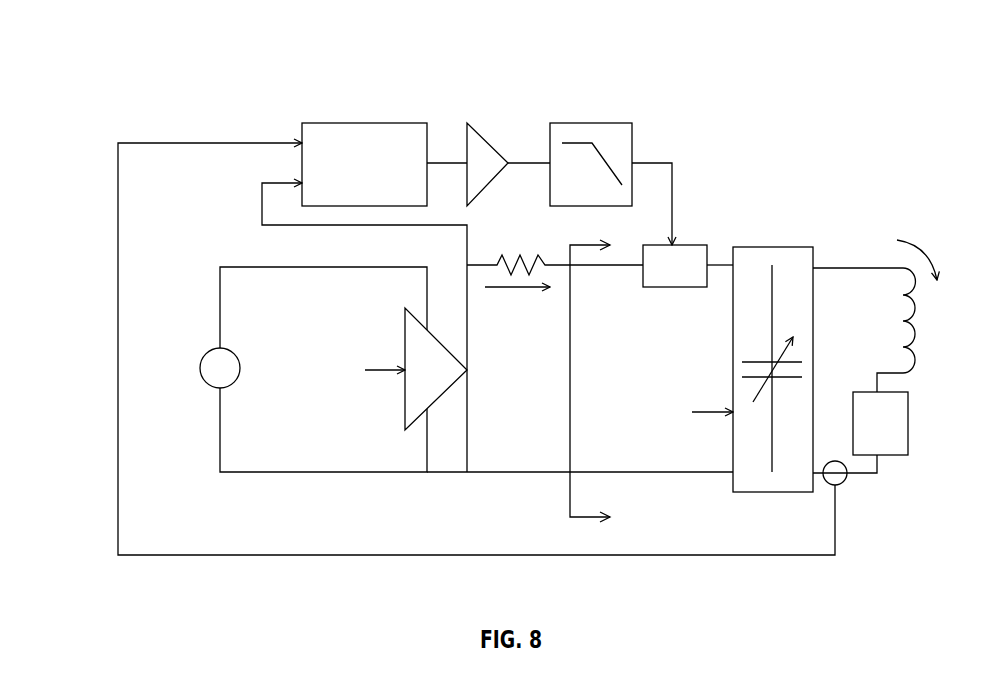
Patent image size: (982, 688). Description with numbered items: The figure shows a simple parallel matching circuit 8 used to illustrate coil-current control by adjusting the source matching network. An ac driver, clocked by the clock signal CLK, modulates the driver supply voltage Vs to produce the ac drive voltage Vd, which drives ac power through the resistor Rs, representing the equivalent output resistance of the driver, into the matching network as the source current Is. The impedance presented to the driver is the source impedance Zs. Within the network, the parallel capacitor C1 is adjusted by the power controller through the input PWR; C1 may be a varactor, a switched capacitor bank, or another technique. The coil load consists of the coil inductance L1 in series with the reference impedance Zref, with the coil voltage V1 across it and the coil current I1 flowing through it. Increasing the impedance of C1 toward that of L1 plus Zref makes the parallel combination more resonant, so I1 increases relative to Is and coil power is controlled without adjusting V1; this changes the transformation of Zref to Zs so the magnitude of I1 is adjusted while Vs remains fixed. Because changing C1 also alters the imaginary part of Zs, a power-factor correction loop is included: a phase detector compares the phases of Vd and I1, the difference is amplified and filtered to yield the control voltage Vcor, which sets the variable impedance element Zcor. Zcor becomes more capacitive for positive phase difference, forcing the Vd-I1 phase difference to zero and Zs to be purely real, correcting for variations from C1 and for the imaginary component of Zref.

The parallel matching circuit 8 is at (170, 68).
The ac driver supply voltage Vs is at (234, 368).
The ac drive voltage Vd is at (497, 368).
The clock signal CLK is at (373, 358).
The resistor Rs is at (555, 253).
The source current Is is at (517, 304).
The source impedance Zs is at (590, 381).
The control voltage Vcor is at (669, 190).
The variable impedance element Zcor is at (675, 266).
The parallel capacitor C1 is at (754, 369).
The power control input PWR is at (688, 424).
The coil inductance L1 is at (864, 330).
The coil voltage V1 is at (839, 340).
The reference impedance Zref is at (874, 423).
The coil current I1 is at (926, 254).